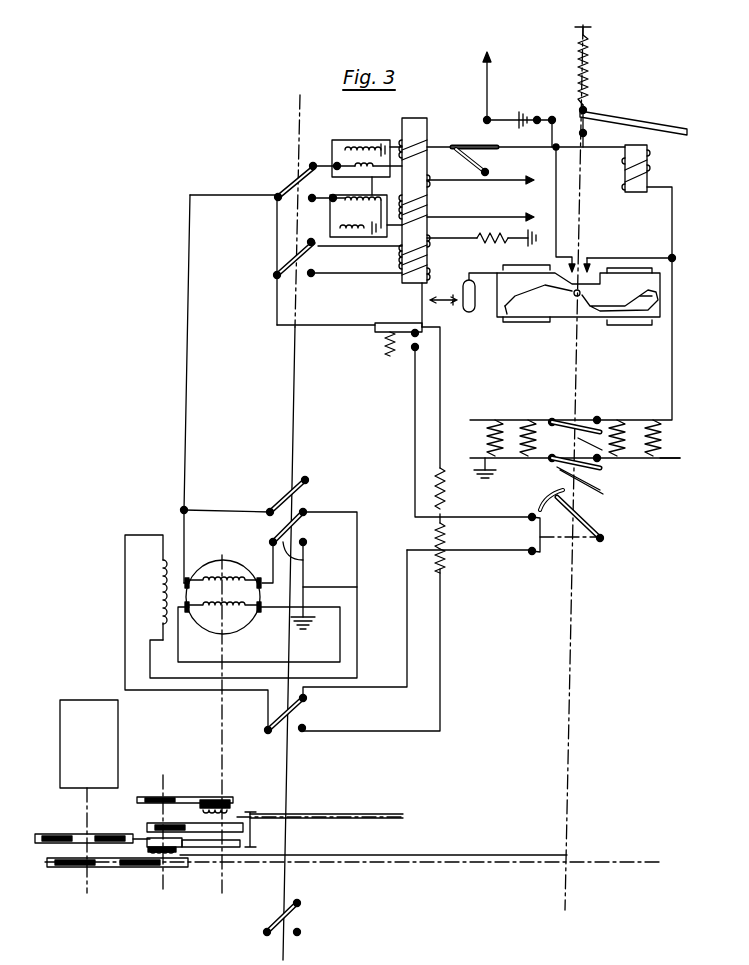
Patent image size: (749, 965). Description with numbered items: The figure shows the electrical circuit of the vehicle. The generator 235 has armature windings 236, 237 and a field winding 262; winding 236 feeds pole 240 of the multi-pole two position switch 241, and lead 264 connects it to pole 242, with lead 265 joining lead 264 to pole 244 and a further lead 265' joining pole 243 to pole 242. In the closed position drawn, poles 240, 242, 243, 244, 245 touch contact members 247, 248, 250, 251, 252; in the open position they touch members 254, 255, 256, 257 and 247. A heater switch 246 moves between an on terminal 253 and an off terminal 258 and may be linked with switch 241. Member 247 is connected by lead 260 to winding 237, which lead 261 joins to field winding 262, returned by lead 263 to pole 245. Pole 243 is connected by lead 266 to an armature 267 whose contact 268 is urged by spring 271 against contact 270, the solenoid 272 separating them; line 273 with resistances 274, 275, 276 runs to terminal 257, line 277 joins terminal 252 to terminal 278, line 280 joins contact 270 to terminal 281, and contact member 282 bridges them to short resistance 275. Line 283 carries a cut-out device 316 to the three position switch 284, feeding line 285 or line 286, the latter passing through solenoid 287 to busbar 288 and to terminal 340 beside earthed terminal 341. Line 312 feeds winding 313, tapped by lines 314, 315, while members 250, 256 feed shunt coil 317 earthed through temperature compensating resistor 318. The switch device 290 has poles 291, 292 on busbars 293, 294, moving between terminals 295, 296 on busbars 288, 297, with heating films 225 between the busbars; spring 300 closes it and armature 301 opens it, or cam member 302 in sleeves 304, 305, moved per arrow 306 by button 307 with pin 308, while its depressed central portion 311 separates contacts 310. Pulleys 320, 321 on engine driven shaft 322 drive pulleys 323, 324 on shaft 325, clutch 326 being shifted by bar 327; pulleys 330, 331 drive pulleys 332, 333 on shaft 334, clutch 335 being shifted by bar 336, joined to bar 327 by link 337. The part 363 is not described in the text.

The electrical heating films 225 is at (668, 444).
The generator 235 is at (232, 558).
The armature winding 236 is at (240, 575).
The armature winding 237 is at (212, 612).
The pole 240 is at (312, 584).
The multi-pole two position switch 241 is at (313, 160).
The pole 242 is at (290, 180).
The pole 243 is at (290, 262).
The pole 244 is at (282, 500).
The pole 245 is at (276, 717).
The heater switch 246 is at (280, 918).
The contact member 247 is at (310, 511).
The contact member 248 is at (310, 165).
The contact member 250 is at (315, 245).
The contact member 251 is at (309, 478).
The contact member 252 is at (308, 703).
The on terminal 253 is at (300, 900).
The contact member 254 is at (346, 583).
The contact member 255 is at (308, 202).
The contact member 256 is at (306, 300).
The contact member 257 is at (303, 733).
The off terminal 258 is at (300, 930).
The lead 260 is at (332, 565).
The lead 261 is at (272, 612).
The field winding 262 is at (158, 582).
The lead 263 is at (162, 535).
The lead 264 is at (188, 290).
The lead 265 is at (226, 492).
The lead 265' is at (254, 236).
The lead 266 is at (346, 325).
The armature 267 is at (383, 323).
The contact 268 is at (418, 328).
The contact 270 is at (413, 352).
The spring 271 is at (389, 354).
The solenoid 272 is at (428, 110).
The line 273 is at (441, 660).
The resistance 274 is at (444, 480).
The resistance 275 is at (450, 532).
The resistance 276 is at (444, 570).
The line 277 is at (434, 632).
The terminal 278 is at (532, 558).
The line 280 is at (542, 505).
The terminal 281 is at (532, 530).
The contact member 282 is at (604, 538).
The line 283 is at (311, 160).
The single pole three position switch 284 is at (493, 160).
The line 285 is at (487, 70).
The line 286 is at (556, 150).
The solenoid 287 is at (647, 165).
The busbar 288 is at (676, 418).
The two position switch device 290 is at (566, 404).
The pole 291 is at (580, 420).
The pole 292 is at (592, 492).
The busbar 293 is at (497, 418).
The busbar 294 is at (498, 472).
The terminal 295 is at (605, 418).
The terminal 296 is at (600, 462).
The busbar 297 is at (672, 460).
The spring 300 is at (590, 75).
The armature 301 is at (615, 115).
The cam member 302 is at (565, 315).
The sleeve 304 is at (527, 325).
The sleeve 305 is at (627, 328).
The arrow 306 is at (466, 312).
The button 307 is at (475, 315).
The pin 308 is at (581, 296).
The contacts 310 is at (580, 258).
The depressed central portion 311 is at (590, 282).
The line 312 is at (430, 180).
The winding 313 is at (430, 217).
The line 314 is at (495, 185).
The line 315 is at (492, 220).
The cut-out device 316 is at (365, 140).
The shunt coil 317 is at (428, 262).
The temperature compensating resistor 318 is at (492, 240).
The pulley 320 is at (78, 830).
The pulley 321 is at (70, 870).
The engine driven shaft 322 is at (90, 828).
The pulley 323 is at (150, 848).
The pulley 324 is at (165, 870).
The shaft 325 is at (173, 817).
The clutch 326 is at (170, 860).
The bar 327 is at (265, 866).
The pulley 330 is at (187, 822).
The pulley 331 is at (152, 798).
The pulley 332 is at (224, 798).
The pulley 333 is at (232, 850).
The shaft 334 is at (222, 740).
The clutch 335 is at (263, 816).
The bar 336 is at (365, 812).
The link 337 is at (280, 812).
The terminal 340 is at (552, 112).
The earthed terminal 341 is at (538, 115).
The lever arm 363 is at (656, 296).